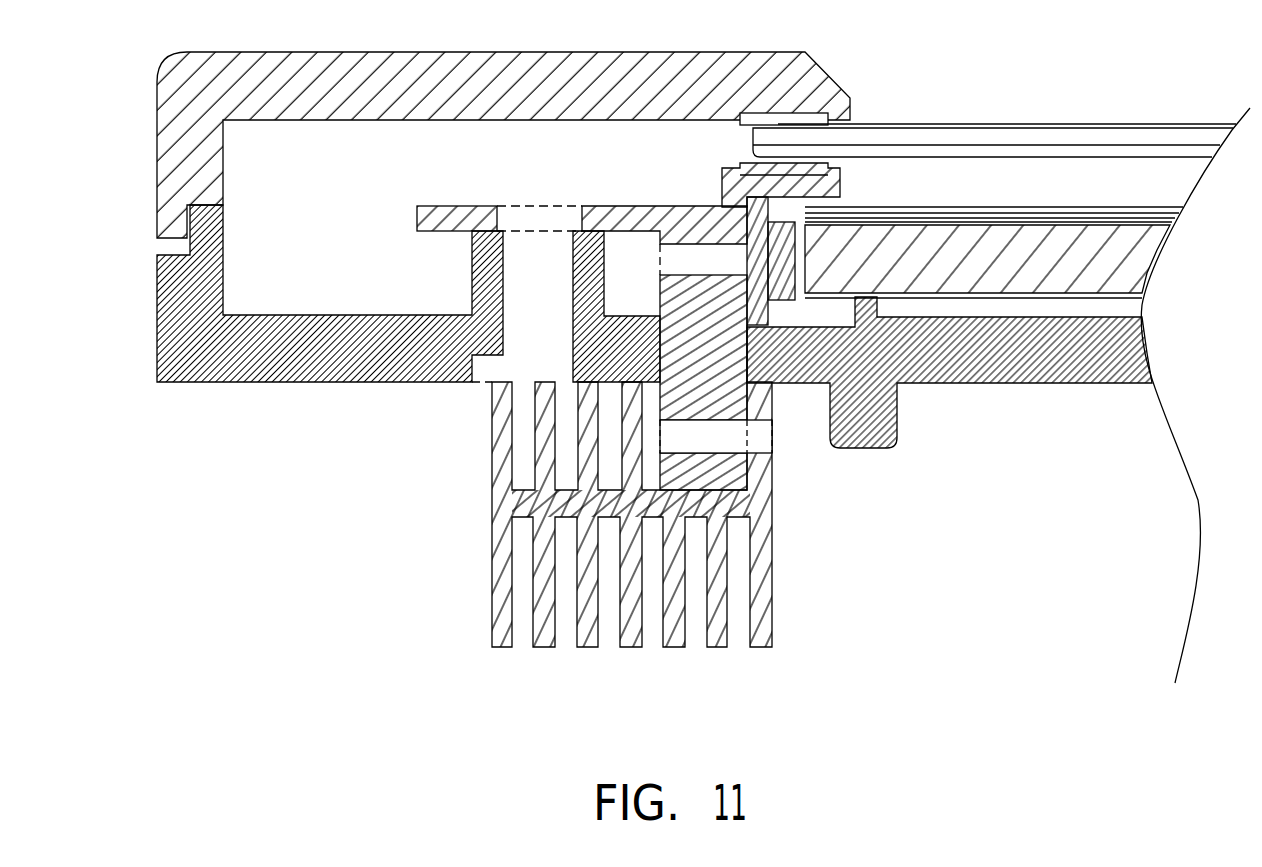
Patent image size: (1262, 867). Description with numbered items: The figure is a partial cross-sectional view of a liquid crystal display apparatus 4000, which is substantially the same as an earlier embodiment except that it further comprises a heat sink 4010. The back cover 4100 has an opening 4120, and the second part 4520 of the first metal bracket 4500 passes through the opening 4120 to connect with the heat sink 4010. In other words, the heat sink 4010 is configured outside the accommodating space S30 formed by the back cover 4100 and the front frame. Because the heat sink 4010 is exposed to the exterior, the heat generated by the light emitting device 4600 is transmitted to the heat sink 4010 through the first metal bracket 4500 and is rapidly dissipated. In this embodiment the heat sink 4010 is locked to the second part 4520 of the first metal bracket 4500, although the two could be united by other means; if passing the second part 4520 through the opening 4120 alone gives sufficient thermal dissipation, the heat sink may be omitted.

The display apparatus 4000 is at (1229, 753).
The heat sink 4010 is at (763, 538).
The back cover 4100 is at (970, 375).
The opening 4120 is at (744, 370).
The first metal bracket 4500 is at (658, 233).
The second part 4520 is at (748, 370).
The light emitting device 4600 is at (783, 243).
The accommodating space S30 is at (257, 179).